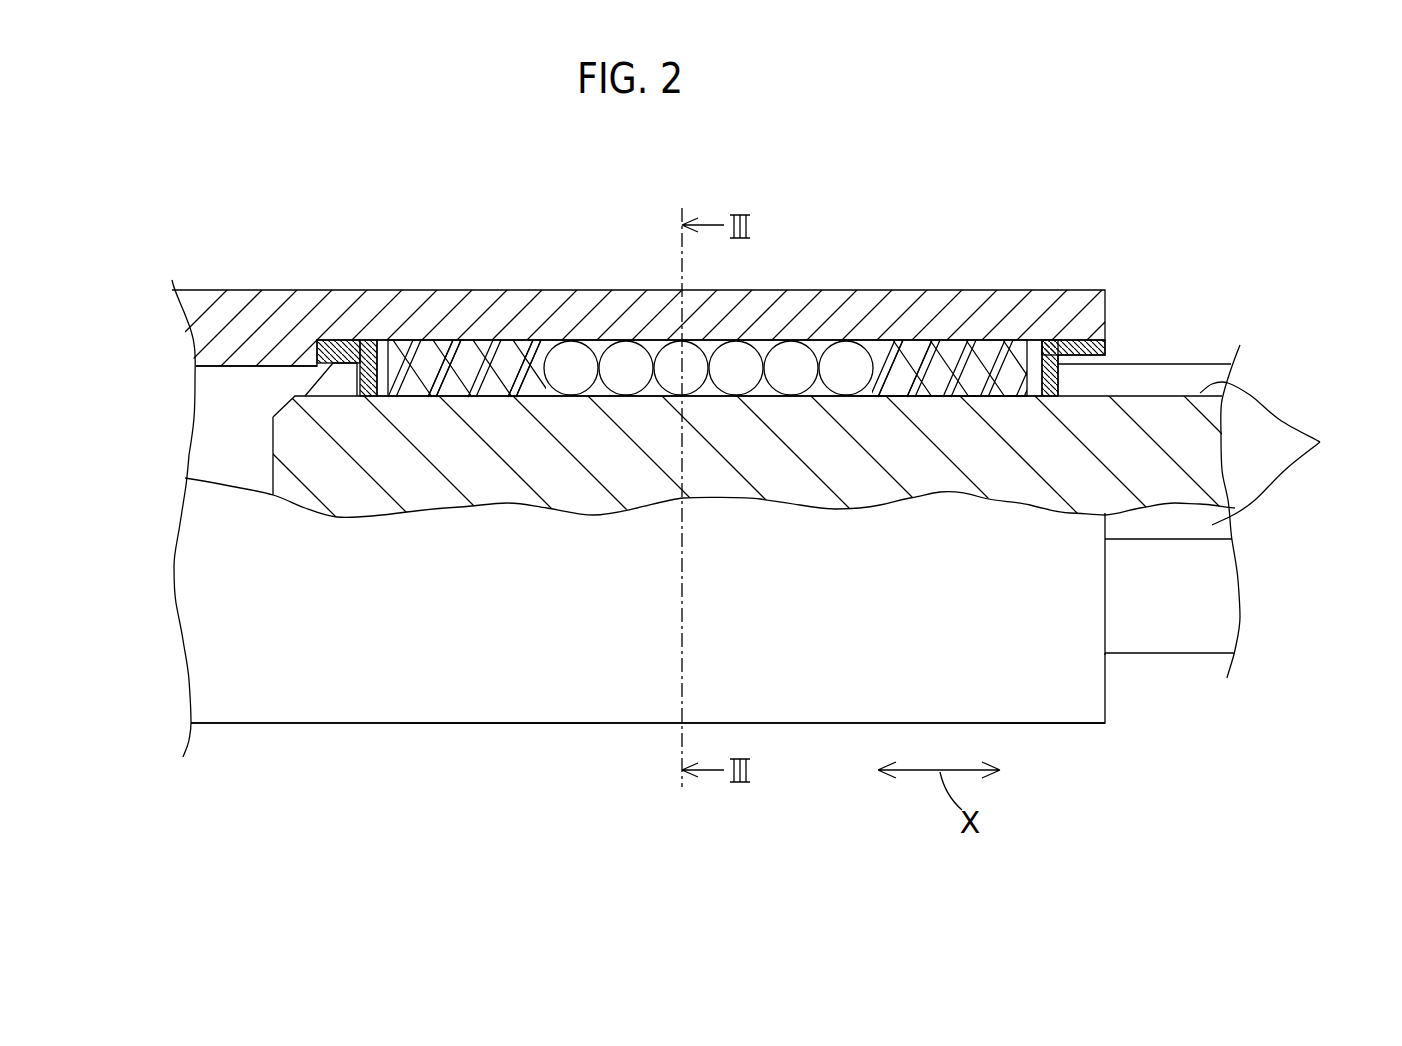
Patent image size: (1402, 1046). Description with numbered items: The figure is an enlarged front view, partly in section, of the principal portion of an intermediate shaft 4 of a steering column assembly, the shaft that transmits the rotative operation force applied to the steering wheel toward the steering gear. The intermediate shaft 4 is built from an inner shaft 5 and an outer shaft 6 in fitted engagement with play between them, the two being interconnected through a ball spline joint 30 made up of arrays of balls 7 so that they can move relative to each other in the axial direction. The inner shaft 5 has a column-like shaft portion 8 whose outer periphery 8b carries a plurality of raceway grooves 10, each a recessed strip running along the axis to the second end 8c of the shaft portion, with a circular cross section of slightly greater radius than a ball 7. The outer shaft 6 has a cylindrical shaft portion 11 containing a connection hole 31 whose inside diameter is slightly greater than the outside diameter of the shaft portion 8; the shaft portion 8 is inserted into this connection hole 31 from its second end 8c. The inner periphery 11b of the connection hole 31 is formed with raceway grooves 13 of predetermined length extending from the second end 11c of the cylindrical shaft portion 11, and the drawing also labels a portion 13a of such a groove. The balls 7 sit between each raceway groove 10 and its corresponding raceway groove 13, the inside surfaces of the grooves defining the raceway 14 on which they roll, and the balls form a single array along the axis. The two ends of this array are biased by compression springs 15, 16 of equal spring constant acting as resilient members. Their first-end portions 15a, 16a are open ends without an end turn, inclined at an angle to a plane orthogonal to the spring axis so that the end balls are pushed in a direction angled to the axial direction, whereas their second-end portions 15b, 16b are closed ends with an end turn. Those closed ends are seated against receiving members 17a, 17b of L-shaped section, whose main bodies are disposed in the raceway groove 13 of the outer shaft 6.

The intermediate shaft 4 is at (543, 781).
The inner shaft 5 is at (1205, 358).
The outer shaft 6 is at (316, 742).
The balls 7 is at (667, 358).
The shaft portion 8 is at (1148, 655).
The outer periphery 8b is at (1208, 655).
The second end 8c is at (272, 472).
The raceway grooves 10 is at (1278, 453).
The cylindrical shaft portion 11 is at (402, 725).
The inner periphery 11b is at (227, 368).
The second end 11c is at (1106, 707).
The raceway grooves 13 is at (398, 343).
The left coil portion 13a is at (449, 342).
The raceway 14 is at (968, 346).
The compression spring 15 is at (972, 337).
The first-end portion 15a is at (870, 334).
The second-end portion 15b is at (1060, 338).
The compression spring 16 is at (462, 343).
The first-end portion 16a is at (555, 342).
The second-end portion 16b is at (357, 342).
The receiving member 17a is at (1105, 318).
The receiving member 17b is at (318, 337).
The ball spline joint 30 is at (782, 238).
The connection hole 31 is at (248, 375).